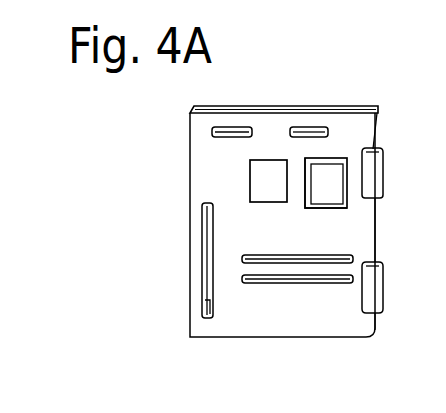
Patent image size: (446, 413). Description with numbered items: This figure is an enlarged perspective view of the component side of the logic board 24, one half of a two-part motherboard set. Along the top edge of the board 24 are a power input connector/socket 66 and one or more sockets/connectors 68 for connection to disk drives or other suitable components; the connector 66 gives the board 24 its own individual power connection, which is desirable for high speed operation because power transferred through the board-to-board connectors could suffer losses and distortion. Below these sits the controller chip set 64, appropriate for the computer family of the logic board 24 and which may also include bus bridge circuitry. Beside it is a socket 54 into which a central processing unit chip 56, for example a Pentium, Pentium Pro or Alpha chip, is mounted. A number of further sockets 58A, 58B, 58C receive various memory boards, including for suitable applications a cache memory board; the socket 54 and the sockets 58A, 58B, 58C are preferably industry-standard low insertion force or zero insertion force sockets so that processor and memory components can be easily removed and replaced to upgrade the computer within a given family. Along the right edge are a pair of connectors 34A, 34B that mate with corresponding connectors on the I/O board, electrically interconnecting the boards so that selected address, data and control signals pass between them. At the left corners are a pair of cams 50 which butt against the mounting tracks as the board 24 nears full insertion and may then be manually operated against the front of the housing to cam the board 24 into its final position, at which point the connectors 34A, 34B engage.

The cams 50 is at (195, 331).
The logic board 24 is at (271, 121).
The sockets/connectors 68 is at (233, 121).
The power input connector/socket 66 is at (314, 120).
The connector 34A is at (378, 103).
The connector 34B is at (380, 315).
The controller chip set 64 is at (252, 177).
The central processing unit chip 56 is at (316, 215).
The socket 54 is at (305, 207).
The socket 58A is at (298, 286).
The socket 58B is at (312, 290).
The socket 58C is at (210, 343).